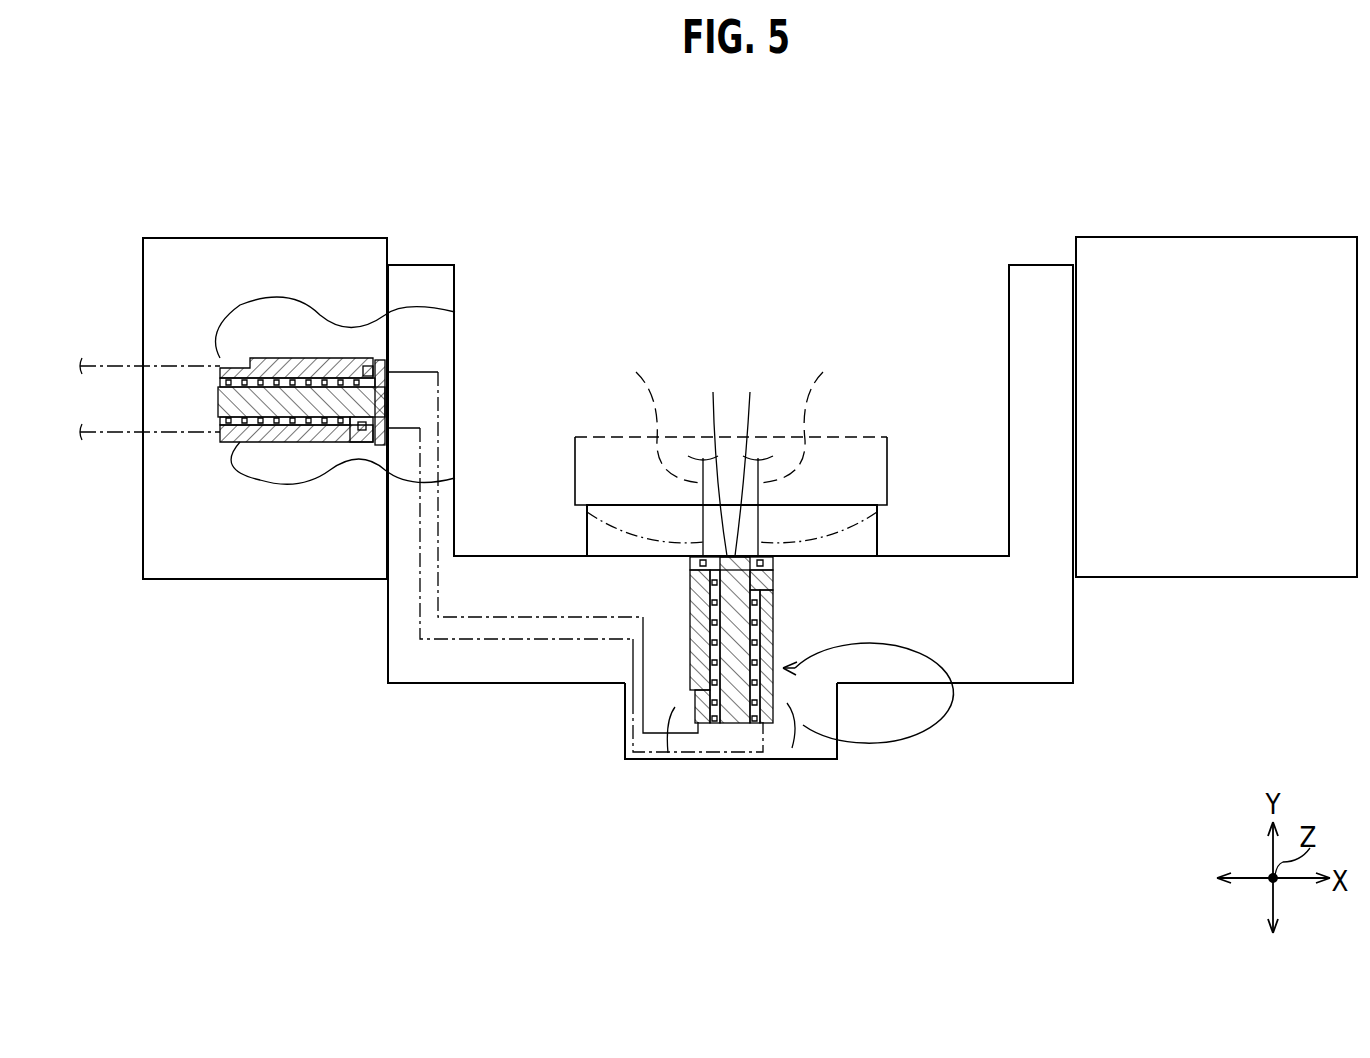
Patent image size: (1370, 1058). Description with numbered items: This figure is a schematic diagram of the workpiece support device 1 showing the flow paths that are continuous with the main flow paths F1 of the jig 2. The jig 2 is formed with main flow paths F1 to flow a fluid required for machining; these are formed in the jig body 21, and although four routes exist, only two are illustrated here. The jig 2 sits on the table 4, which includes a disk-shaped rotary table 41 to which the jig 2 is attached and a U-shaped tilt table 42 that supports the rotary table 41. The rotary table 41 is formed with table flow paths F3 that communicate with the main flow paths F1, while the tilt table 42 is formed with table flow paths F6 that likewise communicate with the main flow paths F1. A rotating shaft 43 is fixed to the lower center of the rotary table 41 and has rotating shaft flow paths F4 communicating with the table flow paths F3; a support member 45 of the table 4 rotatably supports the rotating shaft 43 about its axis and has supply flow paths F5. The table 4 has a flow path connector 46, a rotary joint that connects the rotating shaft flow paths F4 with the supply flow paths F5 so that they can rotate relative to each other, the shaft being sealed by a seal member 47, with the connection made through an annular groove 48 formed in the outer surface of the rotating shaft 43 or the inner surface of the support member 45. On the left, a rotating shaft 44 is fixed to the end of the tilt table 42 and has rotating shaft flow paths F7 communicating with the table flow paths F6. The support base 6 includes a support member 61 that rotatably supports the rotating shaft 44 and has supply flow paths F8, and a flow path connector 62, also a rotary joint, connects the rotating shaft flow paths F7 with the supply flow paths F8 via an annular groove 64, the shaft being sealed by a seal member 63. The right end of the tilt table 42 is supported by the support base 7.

The workpiece support device 1 is at (893, 160).
The jig 2 is at (787, 411).
The jig body 21 is at (890, 447).
The table 4 is at (730, 528).
The rotary table 41 is at (868, 532).
The tilt table 42 is at (980, 650).
The rotating shaft 43 is at (733, 708).
The rotating shaft 44 is at (227, 392).
The support member 45 is at (690, 660).
The flow path connector 46 is at (808, 558).
The seal member 47 is at (690, 705).
The annular groove 48 is at (727, 705).
The support base 6 is at (163, 237).
The support member 61 is at (320, 358).
The flow path connector 62 is at (302, 452).
The seal member 63 is at (275, 378).
The annular groove 64 is at (263, 378).
The support base 7 is at (1330, 237).
The main flow paths F1 is at (734, 412).
The table flow paths F3 is at (877, 510).
The rotating shaft flow paths F4 is at (728, 456).
The supply flow paths F5 is at (667, 722).
The table flow paths F6 is at (497, 617).
The rotating shaft flow paths F7 is at (380, 397).
The supply flow paths F8 is at (258, 358).